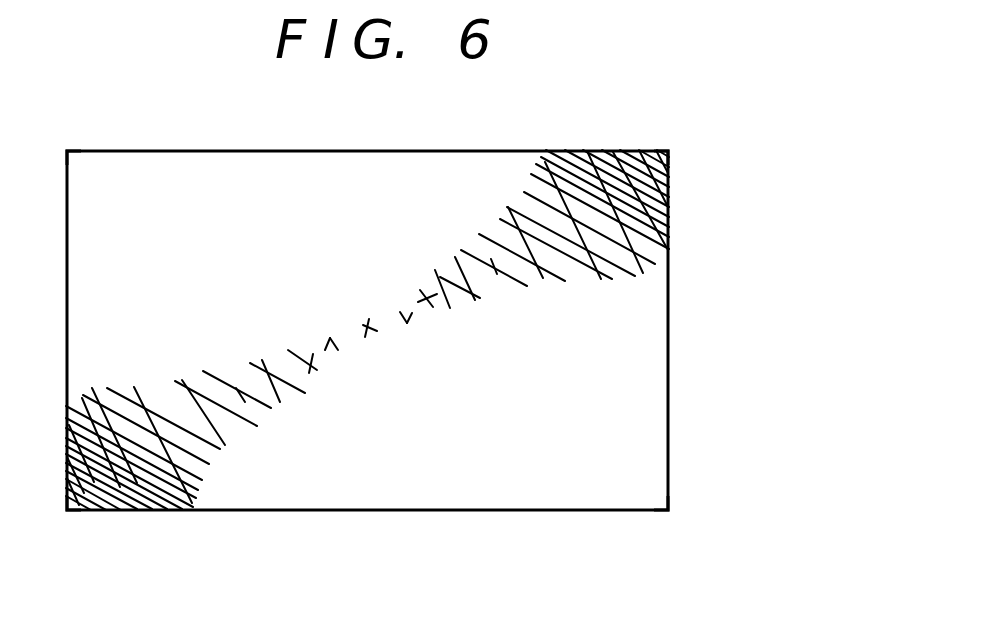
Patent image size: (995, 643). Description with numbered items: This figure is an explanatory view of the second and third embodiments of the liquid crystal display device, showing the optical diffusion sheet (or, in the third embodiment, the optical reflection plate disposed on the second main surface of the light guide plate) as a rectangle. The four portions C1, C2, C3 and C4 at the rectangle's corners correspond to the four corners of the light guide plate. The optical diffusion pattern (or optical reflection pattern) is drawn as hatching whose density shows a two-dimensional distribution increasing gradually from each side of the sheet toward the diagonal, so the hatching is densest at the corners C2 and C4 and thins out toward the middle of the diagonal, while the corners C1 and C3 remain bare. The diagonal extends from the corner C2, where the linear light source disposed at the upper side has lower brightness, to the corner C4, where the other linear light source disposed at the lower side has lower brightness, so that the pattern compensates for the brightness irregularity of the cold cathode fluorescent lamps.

The corner portion C1 is at (669, 527).
The corner portion C2 is at (669, 139).
The corner portion C3 is at (71, 139).
The corner portion C4 is at (72, 523).